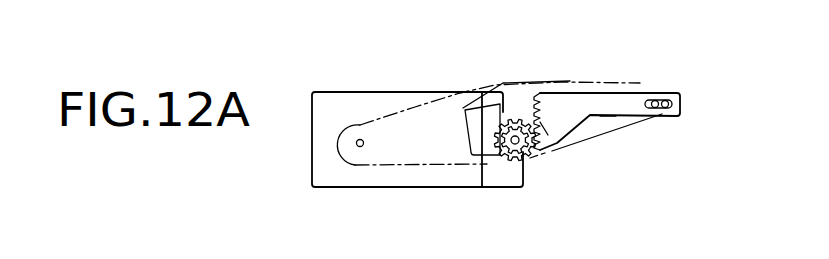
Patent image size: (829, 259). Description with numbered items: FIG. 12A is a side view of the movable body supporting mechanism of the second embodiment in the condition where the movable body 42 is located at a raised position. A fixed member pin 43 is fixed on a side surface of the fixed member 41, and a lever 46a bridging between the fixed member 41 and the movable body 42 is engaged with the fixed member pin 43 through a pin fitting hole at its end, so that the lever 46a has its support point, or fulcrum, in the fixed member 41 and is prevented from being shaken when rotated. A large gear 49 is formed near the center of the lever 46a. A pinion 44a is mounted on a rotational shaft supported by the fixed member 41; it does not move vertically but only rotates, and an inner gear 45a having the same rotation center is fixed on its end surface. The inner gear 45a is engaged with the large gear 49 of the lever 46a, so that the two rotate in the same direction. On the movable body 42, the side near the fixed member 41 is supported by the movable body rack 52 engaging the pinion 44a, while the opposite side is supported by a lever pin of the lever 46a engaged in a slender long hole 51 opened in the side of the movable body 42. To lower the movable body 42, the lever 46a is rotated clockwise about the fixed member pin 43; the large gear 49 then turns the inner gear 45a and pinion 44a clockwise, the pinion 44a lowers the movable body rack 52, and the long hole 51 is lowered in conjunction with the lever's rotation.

The fixed member 41 is at (360, 92).
The movable body 42 is at (645, 92).
The fixed member pin 43 is at (360, 147).
The pinion 44a is at (516, 112).
The inner gear 45a is at (483, 108).
The lever 46a is at (608, 125).
The large gear 49 is at (534, 115).
The long hole 51 is at (672, 103).
The movable body rack 52 is at (540, 122).